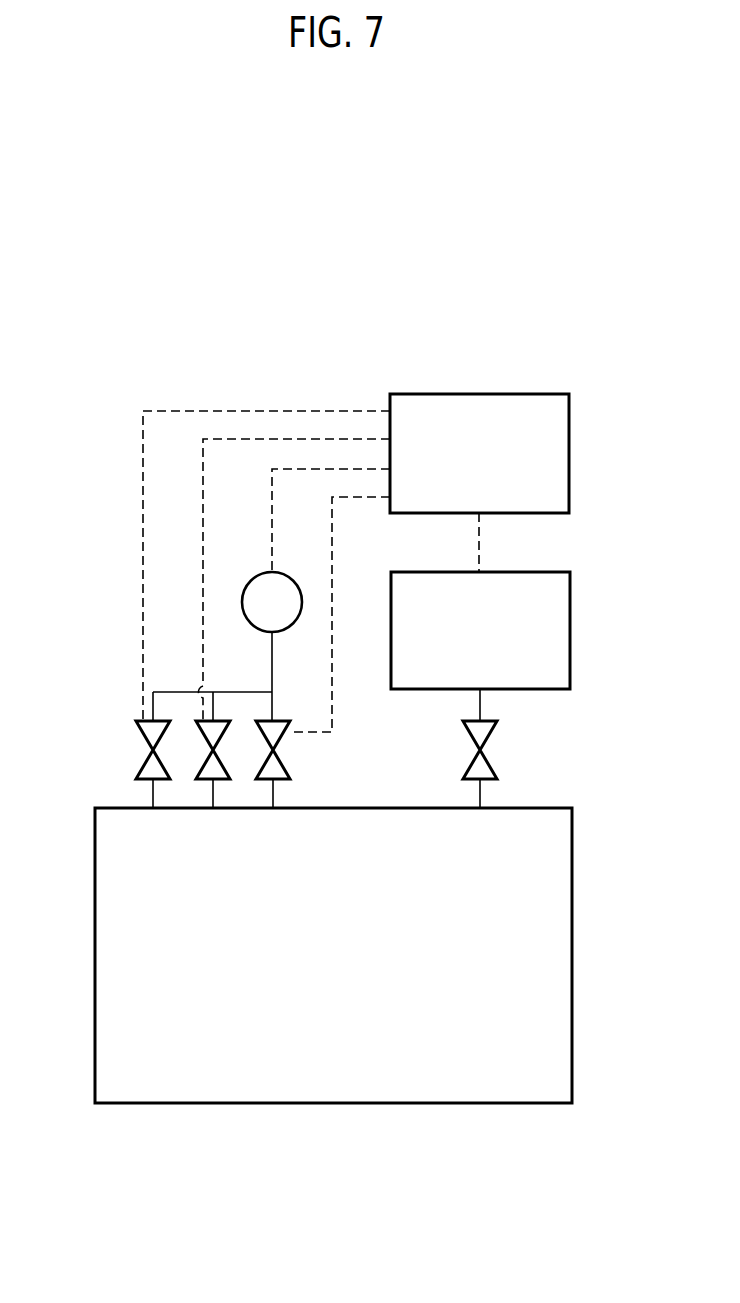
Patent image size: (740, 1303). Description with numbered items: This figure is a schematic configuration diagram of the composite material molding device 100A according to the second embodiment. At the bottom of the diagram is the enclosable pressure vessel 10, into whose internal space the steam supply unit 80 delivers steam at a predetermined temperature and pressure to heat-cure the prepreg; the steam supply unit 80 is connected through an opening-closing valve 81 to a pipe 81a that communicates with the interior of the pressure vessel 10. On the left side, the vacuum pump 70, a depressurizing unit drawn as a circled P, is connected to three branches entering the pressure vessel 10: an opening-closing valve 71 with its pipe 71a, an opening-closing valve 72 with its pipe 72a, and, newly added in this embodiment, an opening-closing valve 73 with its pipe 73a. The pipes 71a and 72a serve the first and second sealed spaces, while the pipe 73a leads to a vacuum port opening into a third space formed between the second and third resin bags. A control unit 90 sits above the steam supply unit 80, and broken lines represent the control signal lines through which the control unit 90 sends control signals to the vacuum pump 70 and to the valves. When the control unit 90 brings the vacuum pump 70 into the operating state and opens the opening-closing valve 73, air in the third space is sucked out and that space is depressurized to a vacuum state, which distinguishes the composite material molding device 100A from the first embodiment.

The composite material molding device 100A is at (78, 378).
The control unit 90 is at (570, 450).
The steam supply unit 80 is at (571, 628).
The opening-closing valve 81 is at (497, 730).
The pipe 81a is at (483, 790).
The vacuum pump 70 is at (248, 586).
The opening-closing valve 71 is at (284, 742).
The pipe 71a is at (275, 795).
The opening-closing valve 72 is at (206, 783).
The pipe 72a is at (214, 792).
The opening-closing valve 73 is at (140, 740).
The pipe 73a is at (151, 795).
The pressure vessel 10 is at (453, 1105).